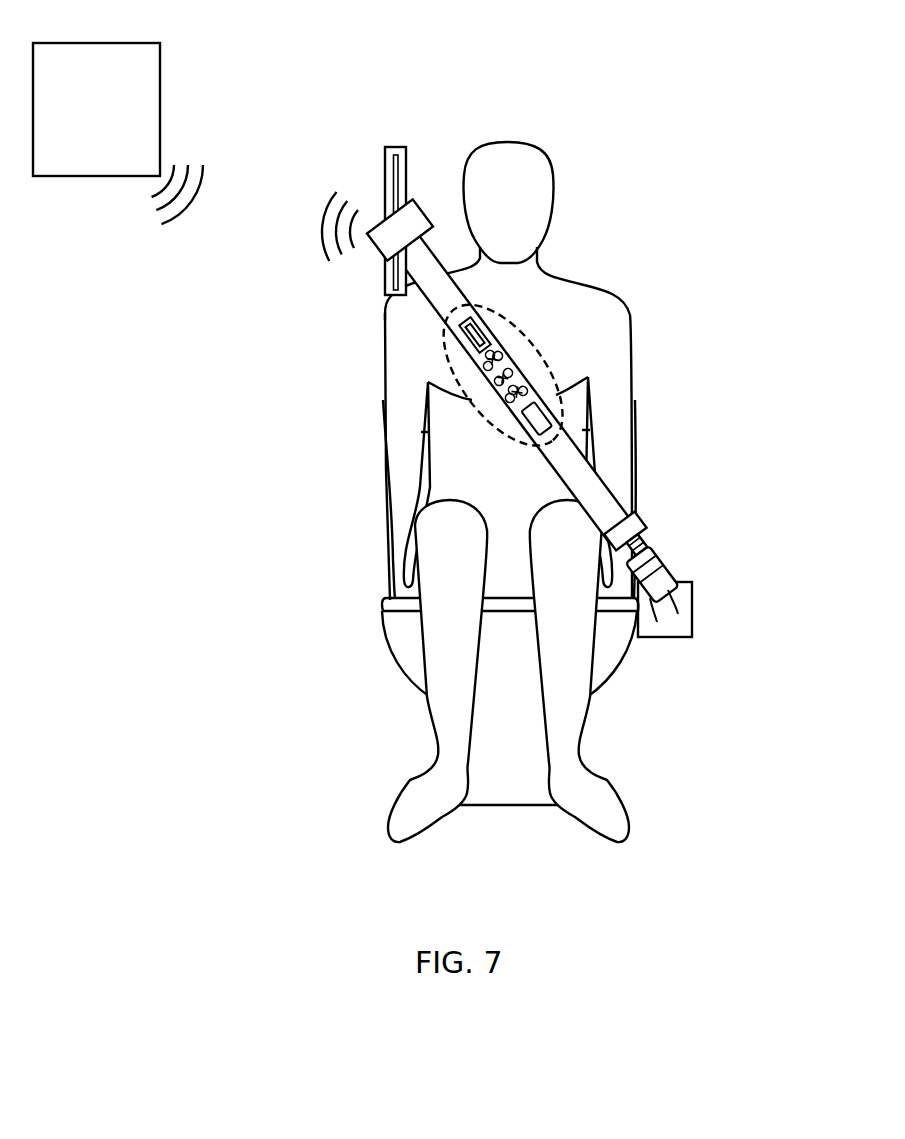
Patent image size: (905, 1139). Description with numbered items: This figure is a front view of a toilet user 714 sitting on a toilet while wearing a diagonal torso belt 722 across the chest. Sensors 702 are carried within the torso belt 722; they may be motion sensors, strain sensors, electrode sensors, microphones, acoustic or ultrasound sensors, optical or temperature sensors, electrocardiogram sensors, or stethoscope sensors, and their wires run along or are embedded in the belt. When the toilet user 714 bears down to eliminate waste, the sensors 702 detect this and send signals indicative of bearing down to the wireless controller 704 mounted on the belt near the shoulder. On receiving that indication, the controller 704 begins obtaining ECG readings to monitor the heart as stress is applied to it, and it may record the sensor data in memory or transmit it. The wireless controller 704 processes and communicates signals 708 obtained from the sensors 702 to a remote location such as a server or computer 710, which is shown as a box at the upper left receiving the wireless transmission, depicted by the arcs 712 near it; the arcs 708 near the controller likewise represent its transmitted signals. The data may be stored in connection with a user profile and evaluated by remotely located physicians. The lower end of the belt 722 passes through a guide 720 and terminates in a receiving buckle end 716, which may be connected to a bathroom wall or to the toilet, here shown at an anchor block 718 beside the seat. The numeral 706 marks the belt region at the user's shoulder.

The sensors 702 is at (455, 365).
The wireless controller 704 is at (382, 232).
The shoulder portion of occupant 706 is at (392, 308).
The signals 708 is at (315, 233).
The server or computer 710 is at (118, 60).
The wireless signal from remote device 712 is at (207, 163).
The toilet user 714 is at (588, 315).
The receiving buckle end 716 is at (658, 578).
The buckle anchor 718 is at (680, 627).
The belt guide 720 is at (398, 152).
The torso belt 722 is at (575, 477).